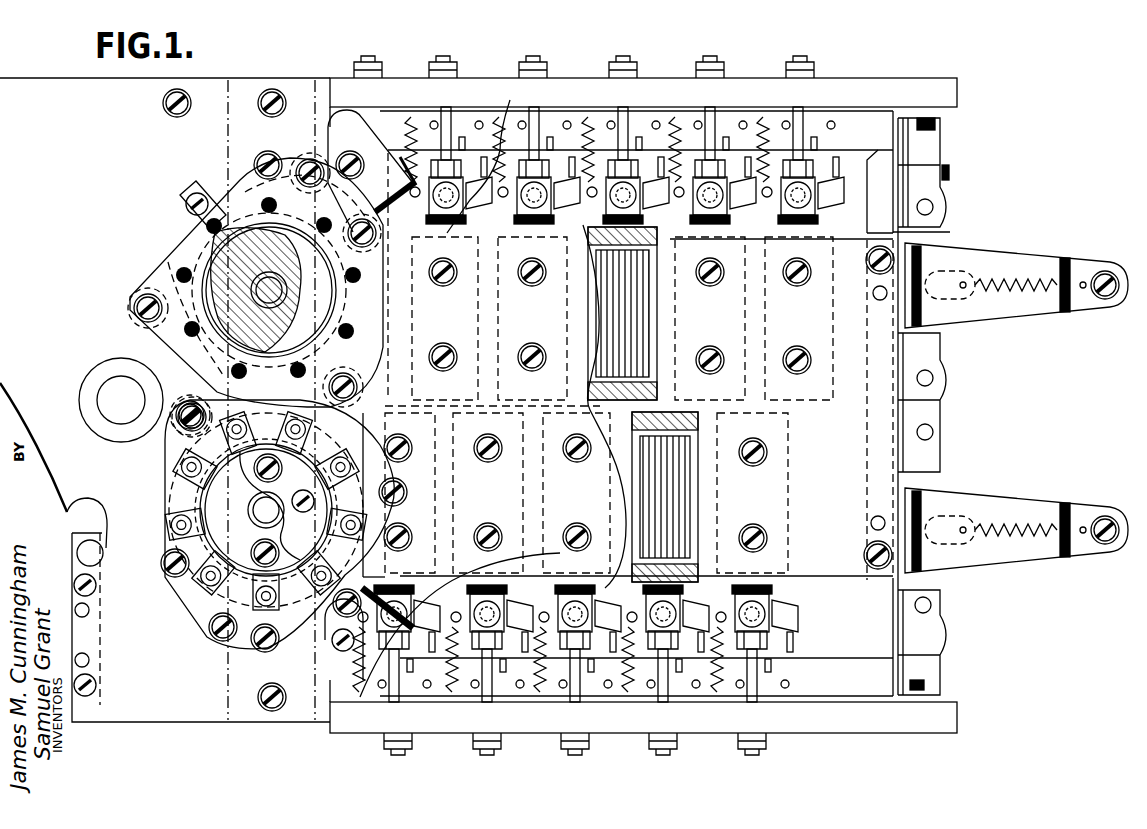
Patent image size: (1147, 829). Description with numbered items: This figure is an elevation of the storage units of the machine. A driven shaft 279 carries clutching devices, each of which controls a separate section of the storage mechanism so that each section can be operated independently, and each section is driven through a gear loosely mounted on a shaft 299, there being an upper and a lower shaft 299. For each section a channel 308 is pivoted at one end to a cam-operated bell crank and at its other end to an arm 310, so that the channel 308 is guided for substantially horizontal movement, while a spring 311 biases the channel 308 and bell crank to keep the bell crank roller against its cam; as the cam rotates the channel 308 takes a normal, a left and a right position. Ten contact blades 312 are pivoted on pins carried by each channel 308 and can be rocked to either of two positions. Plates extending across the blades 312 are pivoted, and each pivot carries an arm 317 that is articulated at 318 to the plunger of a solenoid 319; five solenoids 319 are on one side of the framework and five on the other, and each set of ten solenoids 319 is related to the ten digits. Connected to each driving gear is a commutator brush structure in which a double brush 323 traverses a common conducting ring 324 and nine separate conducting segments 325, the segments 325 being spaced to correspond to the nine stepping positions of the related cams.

The shaft 279 is at (121, 400).
The shaft 299 is at (236, 263).
The channel 308 is at (870, 115).
The arm 310 is at (935, 147).
The spring 311 is at (1015, 270).
The contact blades 312 is at (487, 127).
The arm 317 is at (578, 233).
The articulation 318 is at (510, 200).
The solenoid 319 is at (660, 343).
The double brush 323 is at (230, 285).
The common conducting ring 324 is at (255, 295).
The conducting segments 325 is at (208, 594).